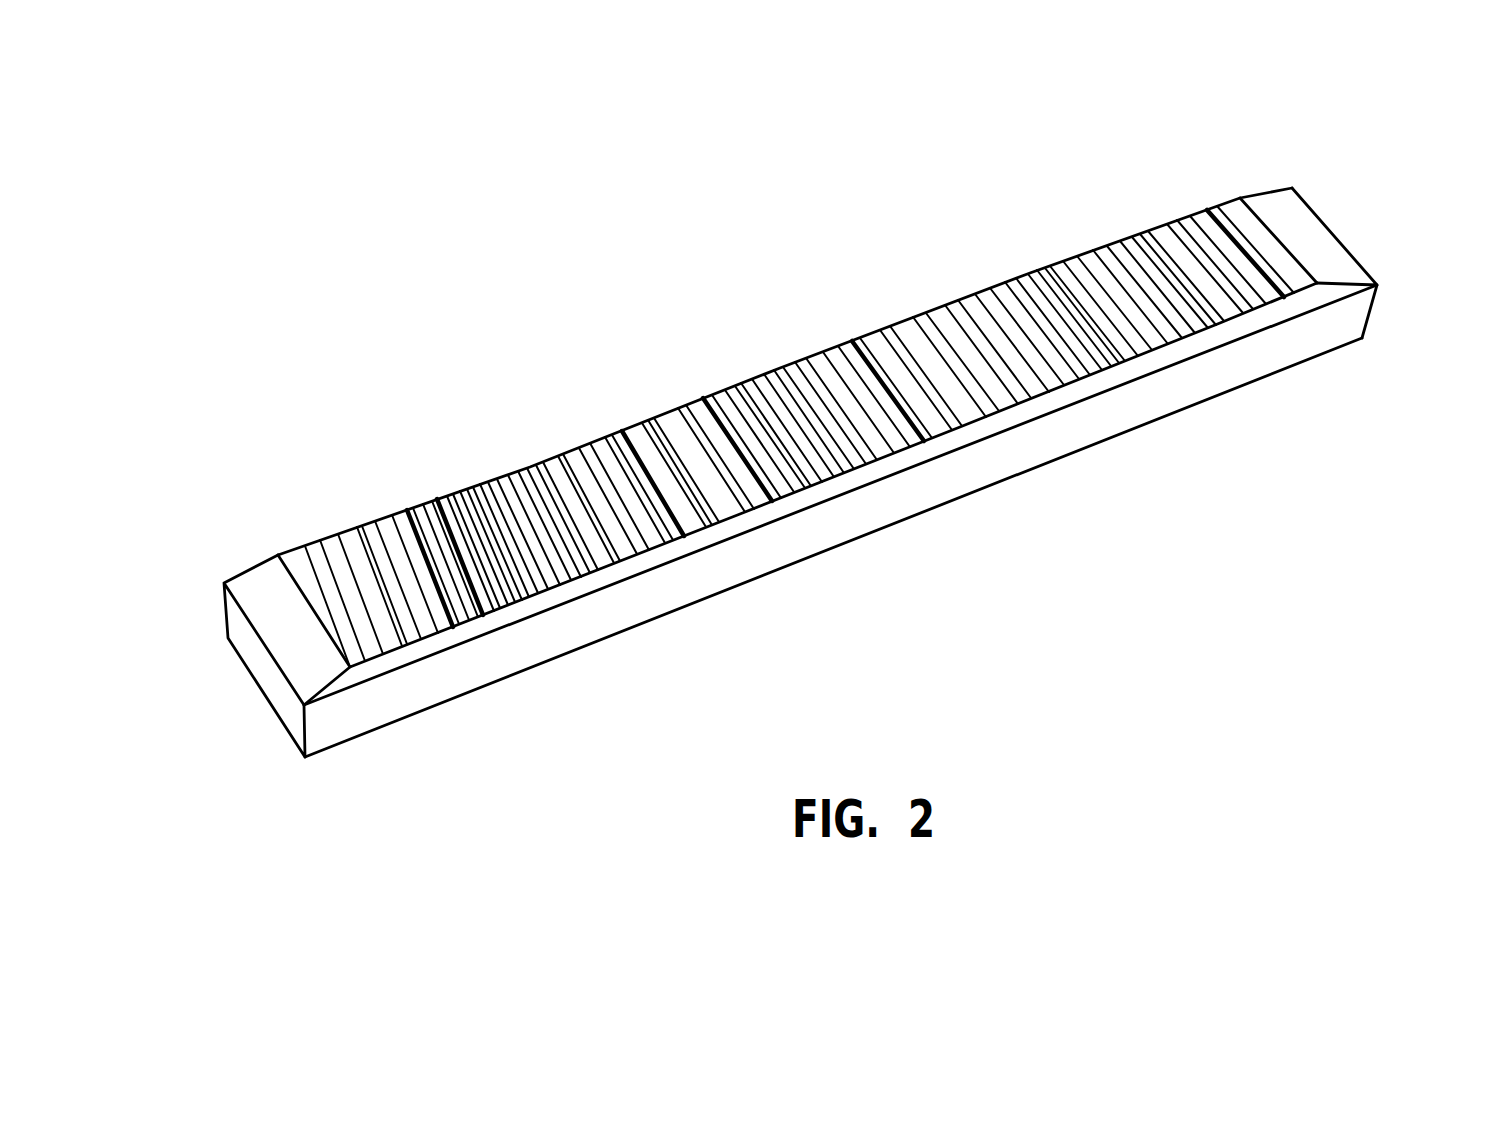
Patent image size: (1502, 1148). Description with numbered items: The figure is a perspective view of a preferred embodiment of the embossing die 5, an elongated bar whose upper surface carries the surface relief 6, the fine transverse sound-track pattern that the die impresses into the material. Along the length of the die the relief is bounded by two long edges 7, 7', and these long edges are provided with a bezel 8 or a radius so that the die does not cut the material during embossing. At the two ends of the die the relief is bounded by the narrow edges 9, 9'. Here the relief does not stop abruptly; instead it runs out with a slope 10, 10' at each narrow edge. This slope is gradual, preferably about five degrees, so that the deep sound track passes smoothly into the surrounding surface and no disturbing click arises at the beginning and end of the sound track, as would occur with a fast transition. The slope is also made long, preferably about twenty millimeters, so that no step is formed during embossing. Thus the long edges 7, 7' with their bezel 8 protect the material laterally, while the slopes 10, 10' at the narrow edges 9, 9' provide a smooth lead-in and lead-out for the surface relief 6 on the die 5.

The die 5 is at (1283, 427).
The surface relief 6 is at (863, 340).
The long edge 7 is at (833, 475).
The long edge 7' is at (759, 376).
The bezel 8 is at (985, 430).
The narrow edge 9 is at (285, 564).
The narrow edge 9' is at (1340, 206).
The slope 10 is at (233, 659).
The slope 10' is at (1383, 263).